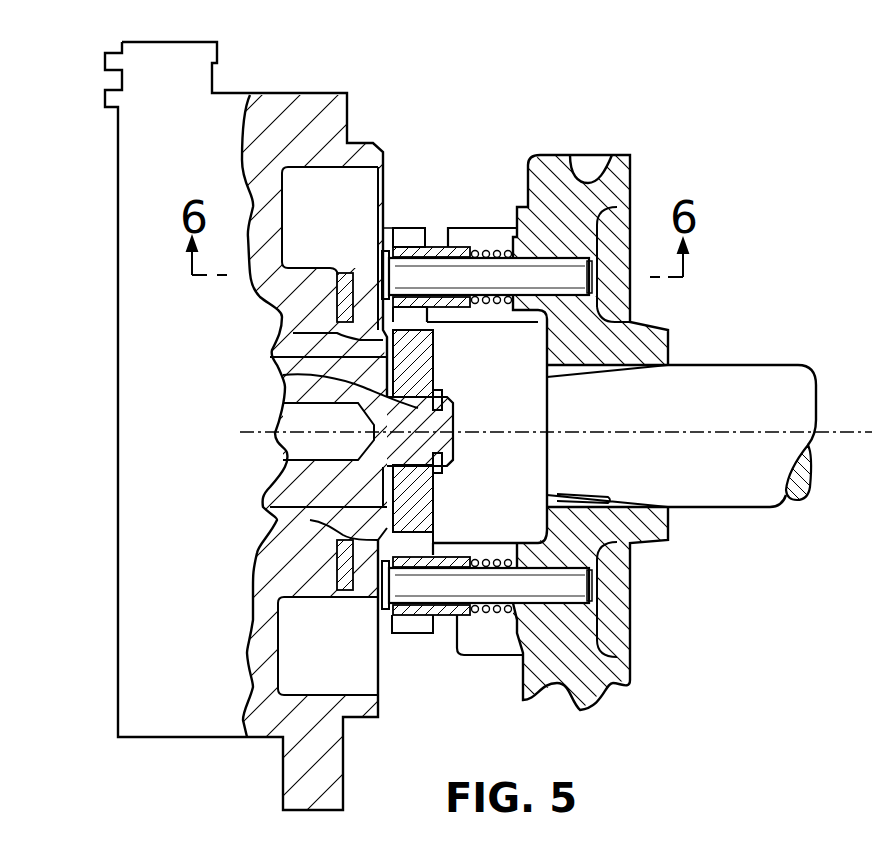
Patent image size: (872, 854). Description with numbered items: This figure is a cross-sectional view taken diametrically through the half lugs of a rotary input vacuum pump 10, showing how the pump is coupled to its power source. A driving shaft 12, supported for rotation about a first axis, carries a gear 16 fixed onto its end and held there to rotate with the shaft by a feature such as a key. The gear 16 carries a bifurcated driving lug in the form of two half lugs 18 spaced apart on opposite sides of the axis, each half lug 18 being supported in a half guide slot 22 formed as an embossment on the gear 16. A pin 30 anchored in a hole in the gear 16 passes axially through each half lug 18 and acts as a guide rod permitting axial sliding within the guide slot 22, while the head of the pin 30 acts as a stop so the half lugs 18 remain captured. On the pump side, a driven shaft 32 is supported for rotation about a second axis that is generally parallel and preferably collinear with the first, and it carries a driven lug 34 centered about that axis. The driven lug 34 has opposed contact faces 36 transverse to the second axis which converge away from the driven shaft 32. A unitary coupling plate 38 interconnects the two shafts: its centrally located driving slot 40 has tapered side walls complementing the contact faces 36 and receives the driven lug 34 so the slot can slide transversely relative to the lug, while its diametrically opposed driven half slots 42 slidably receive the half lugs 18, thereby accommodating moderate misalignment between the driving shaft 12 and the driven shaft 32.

The vacuum pump 10 is at (354, 86).
The driving shaft 12 is at (743, 378).
The gear 16 is at (617, 153).
The half lug 18 is at (435, 247).
The half guide slot 22 is at (470, 237).
The pin 30 is at (577, 278).
The driven shaft 32 is at (443, 421).
The driven lug 34 is at (438, 400).
The contact faces 36 is at (410, 388).
The coupling plate 38 is at (395, 222).
The driving slot 40 is at (300, 376).
The driven half slots 42 is at (391, 238).